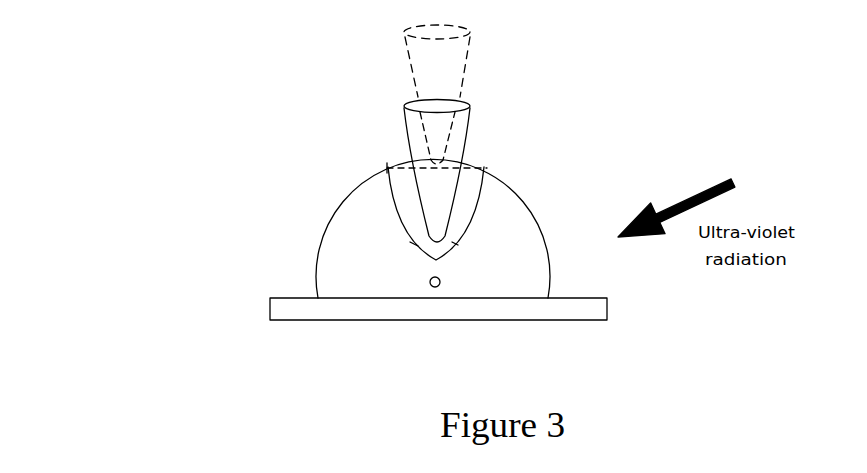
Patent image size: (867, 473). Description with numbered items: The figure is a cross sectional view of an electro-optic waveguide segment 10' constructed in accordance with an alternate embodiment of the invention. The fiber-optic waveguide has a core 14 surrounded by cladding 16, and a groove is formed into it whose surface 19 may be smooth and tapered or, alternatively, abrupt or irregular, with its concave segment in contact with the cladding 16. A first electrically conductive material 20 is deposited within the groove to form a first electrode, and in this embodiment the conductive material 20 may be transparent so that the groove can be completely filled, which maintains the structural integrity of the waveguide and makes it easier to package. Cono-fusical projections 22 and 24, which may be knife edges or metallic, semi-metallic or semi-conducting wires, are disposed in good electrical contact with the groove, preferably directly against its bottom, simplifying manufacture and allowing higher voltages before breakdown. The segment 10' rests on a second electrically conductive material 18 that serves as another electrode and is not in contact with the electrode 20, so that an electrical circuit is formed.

The waveguide segment 10' is at (96, 165).
The core 14 is at (440, 281).
The cladding 16 is at (498, 190).
The second electrically conductive material 18 is at (597, 313).
The surface 19 is at (484, 168).
The first electrically conductive material 20 is at (418, 246).
The cono-fusical projection 22 is at (371, 82).
The cono-fusical projection 24 is at (407, 124).